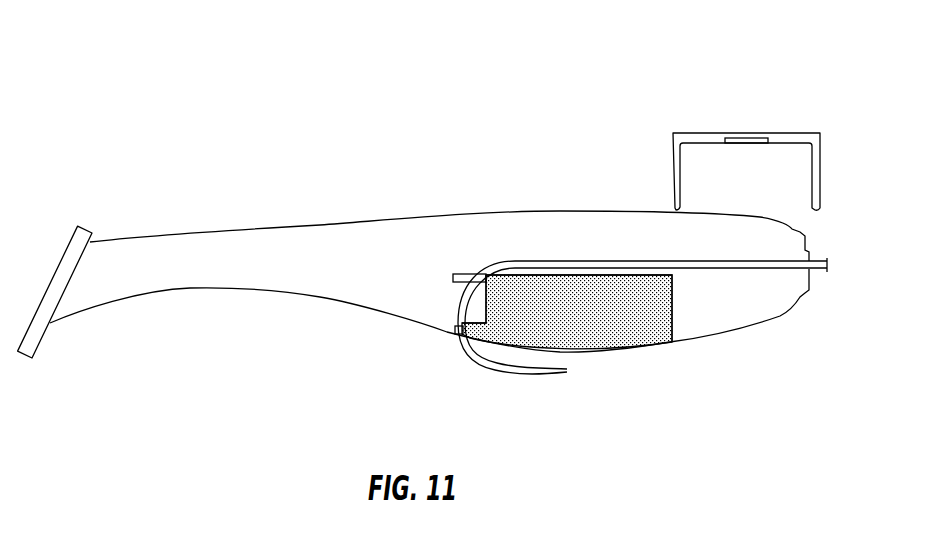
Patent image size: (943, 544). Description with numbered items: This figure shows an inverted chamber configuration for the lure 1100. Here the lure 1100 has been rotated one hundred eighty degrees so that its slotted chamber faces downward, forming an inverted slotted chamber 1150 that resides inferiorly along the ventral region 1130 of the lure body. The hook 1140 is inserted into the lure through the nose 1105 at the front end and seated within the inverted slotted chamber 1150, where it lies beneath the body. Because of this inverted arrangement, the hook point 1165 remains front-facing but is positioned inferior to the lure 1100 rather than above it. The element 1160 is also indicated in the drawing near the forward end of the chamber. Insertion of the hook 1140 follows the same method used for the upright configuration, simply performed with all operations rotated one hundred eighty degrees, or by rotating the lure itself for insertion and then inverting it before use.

The lure 1100 is at (227, 150).
The nose 1105 is at (776, 118).
The ventral region 1130 is at (711, 386).
The hook 1140 is at (688, 263).
The inverted slotted chamber 1150 is at (611, 326).
The tab / contact 1160 is at (466, 280).
The hook point 1165 is at (566, 373).